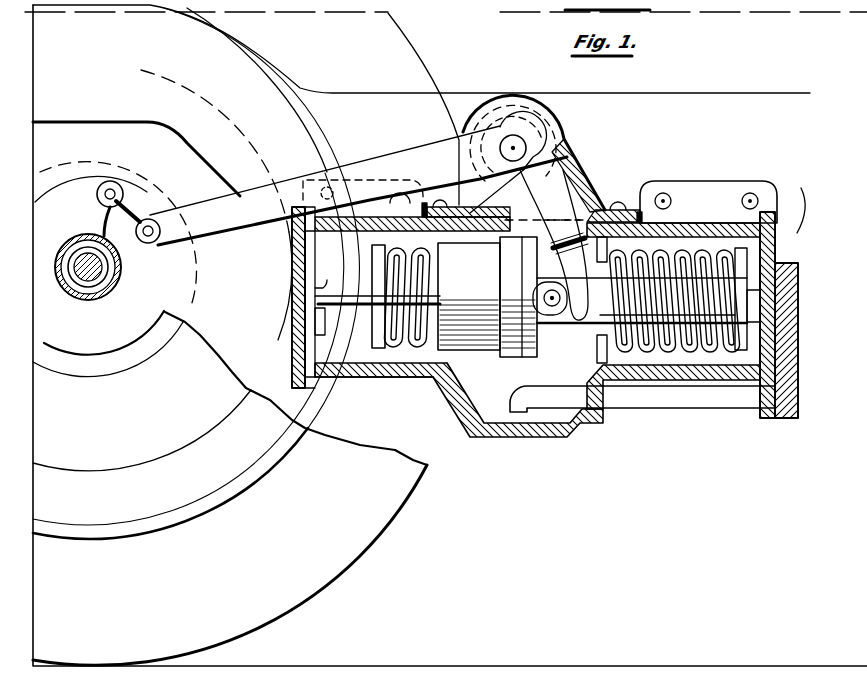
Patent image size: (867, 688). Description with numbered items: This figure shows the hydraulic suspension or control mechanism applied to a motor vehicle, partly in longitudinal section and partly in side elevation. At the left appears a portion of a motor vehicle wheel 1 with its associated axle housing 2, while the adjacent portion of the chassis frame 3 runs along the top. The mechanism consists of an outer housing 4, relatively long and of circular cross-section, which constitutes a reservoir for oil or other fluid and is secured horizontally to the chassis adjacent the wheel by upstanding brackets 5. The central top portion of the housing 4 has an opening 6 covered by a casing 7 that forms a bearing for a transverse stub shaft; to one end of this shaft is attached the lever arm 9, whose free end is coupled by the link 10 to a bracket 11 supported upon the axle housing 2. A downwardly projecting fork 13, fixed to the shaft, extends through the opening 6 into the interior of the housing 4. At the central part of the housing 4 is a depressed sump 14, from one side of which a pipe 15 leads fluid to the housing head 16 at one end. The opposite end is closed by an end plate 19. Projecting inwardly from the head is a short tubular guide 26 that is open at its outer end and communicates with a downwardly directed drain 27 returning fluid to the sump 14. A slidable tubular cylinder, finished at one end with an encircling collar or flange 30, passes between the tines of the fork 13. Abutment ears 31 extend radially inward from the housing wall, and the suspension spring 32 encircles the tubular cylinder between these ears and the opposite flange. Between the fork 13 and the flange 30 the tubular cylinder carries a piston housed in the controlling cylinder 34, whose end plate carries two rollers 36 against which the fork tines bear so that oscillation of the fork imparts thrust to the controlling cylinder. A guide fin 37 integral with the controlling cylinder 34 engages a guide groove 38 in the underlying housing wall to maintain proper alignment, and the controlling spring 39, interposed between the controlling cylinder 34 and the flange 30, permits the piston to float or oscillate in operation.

The motor vehicle wheel 1 is at (383, 522).
The axle housing 2 is at (93, 303).
The chassis frame 3 is at (637, 100).
The outer housing 4 is at (358, 378).
The upstanding brackets 5 is at (700, 187).
The opening 6 is at (600, 195).
The casing 7 is at (562, 138).
The lever arm 9 is at (395, 160).
The link 10 is at (135, 212).
The bracket 11 is at (95, 182).
The fork 13 is at (557, 200).
The sump 14 is at (510, 425).
The pipe 15 is at (557, 400).
The housing head 16 is at (787, 418).
The end plate 19 is at (801, 199).
The short tubular guide 26 is at (315, 288).
The drain 27 is at (320, 318).
The collar 30 is at (372, 265).
The abutment ears 31 is at (605, 355).
The suspension spring 32 is at (693, 352).
The controlling cylinder 34 is at (493, 350).
The rollers 36 is at (562, 328).
The guide fin 37 is at (458, 388).
The guide groove 38 is at (407, 383).
The controlling spring 39 is at (388, 330).